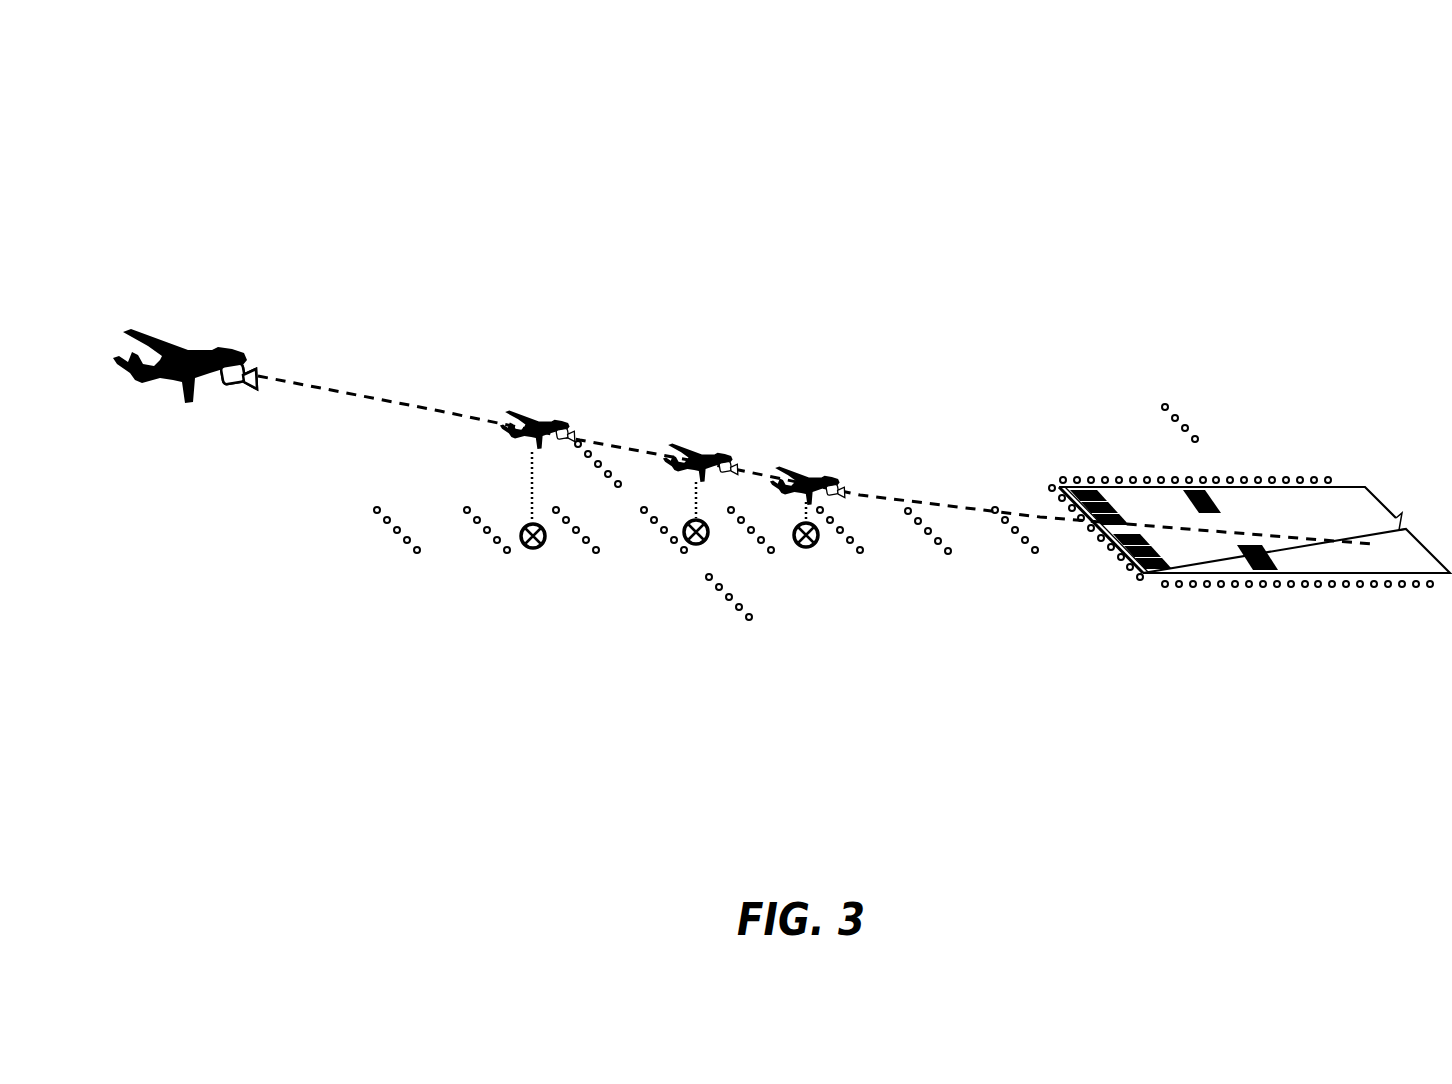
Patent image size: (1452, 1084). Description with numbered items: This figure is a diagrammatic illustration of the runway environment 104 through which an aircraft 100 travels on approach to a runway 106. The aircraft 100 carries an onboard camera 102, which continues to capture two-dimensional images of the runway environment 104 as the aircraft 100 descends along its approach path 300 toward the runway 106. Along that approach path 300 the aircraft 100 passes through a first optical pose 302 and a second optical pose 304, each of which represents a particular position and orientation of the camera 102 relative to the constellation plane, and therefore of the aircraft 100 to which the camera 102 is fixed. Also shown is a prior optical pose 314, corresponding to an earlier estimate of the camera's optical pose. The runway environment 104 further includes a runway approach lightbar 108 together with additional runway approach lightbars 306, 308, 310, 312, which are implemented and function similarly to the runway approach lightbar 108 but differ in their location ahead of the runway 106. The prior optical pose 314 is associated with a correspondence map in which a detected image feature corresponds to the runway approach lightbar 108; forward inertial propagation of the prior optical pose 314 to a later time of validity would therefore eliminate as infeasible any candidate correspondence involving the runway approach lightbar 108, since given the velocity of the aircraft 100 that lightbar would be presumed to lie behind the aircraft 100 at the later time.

The runway environment 104 is at (178, 131).
The aircraft 100 is at (208, 356).
The onboard camera 102 is at (247, 368).
The runway 106 is at (1361, 518).
The runway approach lightbar 108 is at (590, 563).
The approach path 300 is at (441, 413).
The first optical pose 302 is at (690, 442).
The second optical pose 304 is at (798, 462).
The runway approach lightbar 306 is at (779, 563).
The runway approach lightbar 308 is at (874, 564).
The runway approach lightbar 310 is at (958, 563).
The runway approach lightbar 312 is at (1047, 565).
The prior optical pose 314 is at (530, 402).